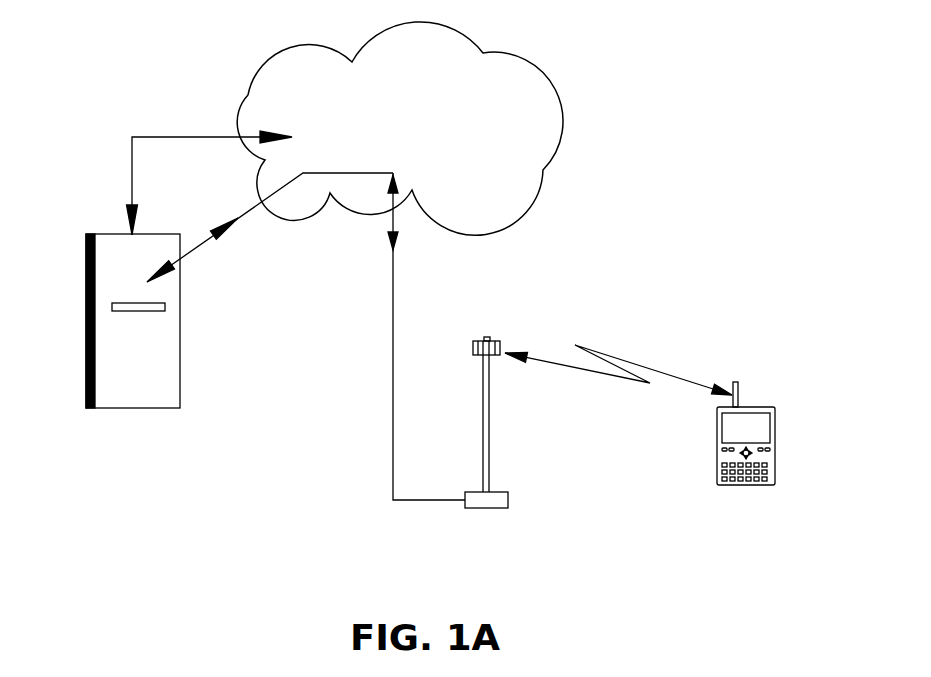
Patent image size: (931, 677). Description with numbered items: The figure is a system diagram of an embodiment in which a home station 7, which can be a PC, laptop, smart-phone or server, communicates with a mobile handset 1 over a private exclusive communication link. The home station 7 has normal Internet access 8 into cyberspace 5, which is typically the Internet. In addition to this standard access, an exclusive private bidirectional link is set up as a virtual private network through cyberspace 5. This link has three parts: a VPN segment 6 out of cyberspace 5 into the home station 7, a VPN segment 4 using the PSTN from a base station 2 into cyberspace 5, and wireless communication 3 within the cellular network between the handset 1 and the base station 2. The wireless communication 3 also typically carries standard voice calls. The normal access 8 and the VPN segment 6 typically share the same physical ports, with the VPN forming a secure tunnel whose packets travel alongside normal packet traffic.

The handset 1 is at (762, 428).
The base station 2 is at (488, 388).
The wireless communication 3 is at (673, 372).
The VPN segment 4 is at (393, 337).
The cyberspace 5 is at (479, 156).
The VPN segment 6 is at (235, 215).
The home station 7 is at (142, 363).
The normal Internet access 8 is at (127, 158).